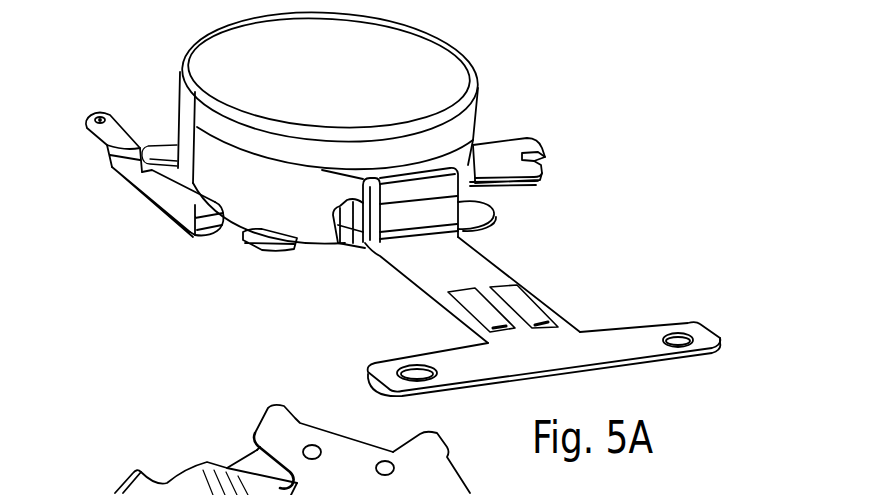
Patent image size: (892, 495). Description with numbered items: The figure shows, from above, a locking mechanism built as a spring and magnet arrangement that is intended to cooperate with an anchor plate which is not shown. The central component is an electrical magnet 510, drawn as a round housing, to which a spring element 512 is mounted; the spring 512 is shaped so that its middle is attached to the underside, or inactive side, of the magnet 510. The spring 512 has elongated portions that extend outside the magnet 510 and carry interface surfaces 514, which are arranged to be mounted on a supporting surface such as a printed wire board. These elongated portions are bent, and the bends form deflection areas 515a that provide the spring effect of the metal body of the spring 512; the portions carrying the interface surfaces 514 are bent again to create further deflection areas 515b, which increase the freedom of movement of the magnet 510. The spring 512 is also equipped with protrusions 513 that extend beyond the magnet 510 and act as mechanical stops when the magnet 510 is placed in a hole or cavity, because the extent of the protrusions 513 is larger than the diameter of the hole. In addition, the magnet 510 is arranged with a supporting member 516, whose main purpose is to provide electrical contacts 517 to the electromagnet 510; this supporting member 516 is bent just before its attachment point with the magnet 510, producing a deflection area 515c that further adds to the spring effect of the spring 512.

The magnet 510 is at (185, 95).
The spring element 512 is at (124, 194).
The protrusions 513 is at (273, 405).
The interface surfaces 514 is at (165, 174).
The deflection areas 515a is at (293, 494).
The further deflection areas 515b is at (183, 220).
The deflection area 515c is at (492, 215).
The supporting member 516 is at (723, 347).
The electrical contacts 517 is at (478, 308).